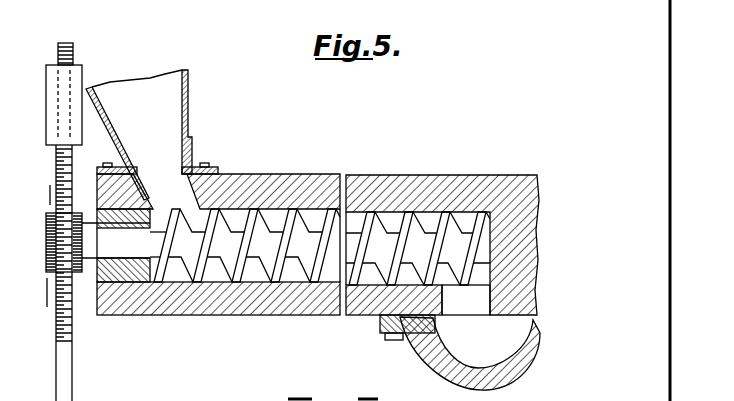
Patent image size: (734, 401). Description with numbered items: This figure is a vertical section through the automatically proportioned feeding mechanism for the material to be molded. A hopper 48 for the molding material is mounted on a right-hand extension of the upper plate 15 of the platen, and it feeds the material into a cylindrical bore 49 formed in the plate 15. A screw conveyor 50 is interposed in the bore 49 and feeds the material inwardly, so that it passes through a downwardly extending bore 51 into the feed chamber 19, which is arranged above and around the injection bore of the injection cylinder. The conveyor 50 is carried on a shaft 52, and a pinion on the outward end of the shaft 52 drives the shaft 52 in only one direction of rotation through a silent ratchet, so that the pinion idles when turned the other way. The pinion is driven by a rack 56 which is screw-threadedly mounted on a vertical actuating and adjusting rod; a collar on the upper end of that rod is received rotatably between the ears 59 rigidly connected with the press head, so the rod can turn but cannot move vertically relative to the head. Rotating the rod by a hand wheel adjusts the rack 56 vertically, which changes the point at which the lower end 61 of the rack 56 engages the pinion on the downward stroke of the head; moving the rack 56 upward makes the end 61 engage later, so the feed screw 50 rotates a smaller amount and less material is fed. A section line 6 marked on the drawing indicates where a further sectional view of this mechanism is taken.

The section line 6- 6 is at (48, 193).
The upper plate 15 is at (497, 183).
The feed chamber 19 is at (473, 362).
The hopper 48 is at (189, 88).
The cylindrical bore 49 is at (389, 218).
The screw conveyor 50 is at (272, 222).
The downwardly extending bore 51 is at (471, 300).
The shaft 52 is at (133, 250).
The rack 56 is at (47, 100).
The ears 59 is at (46, 240).
The lower end of the rack 61 is at (53, 140).